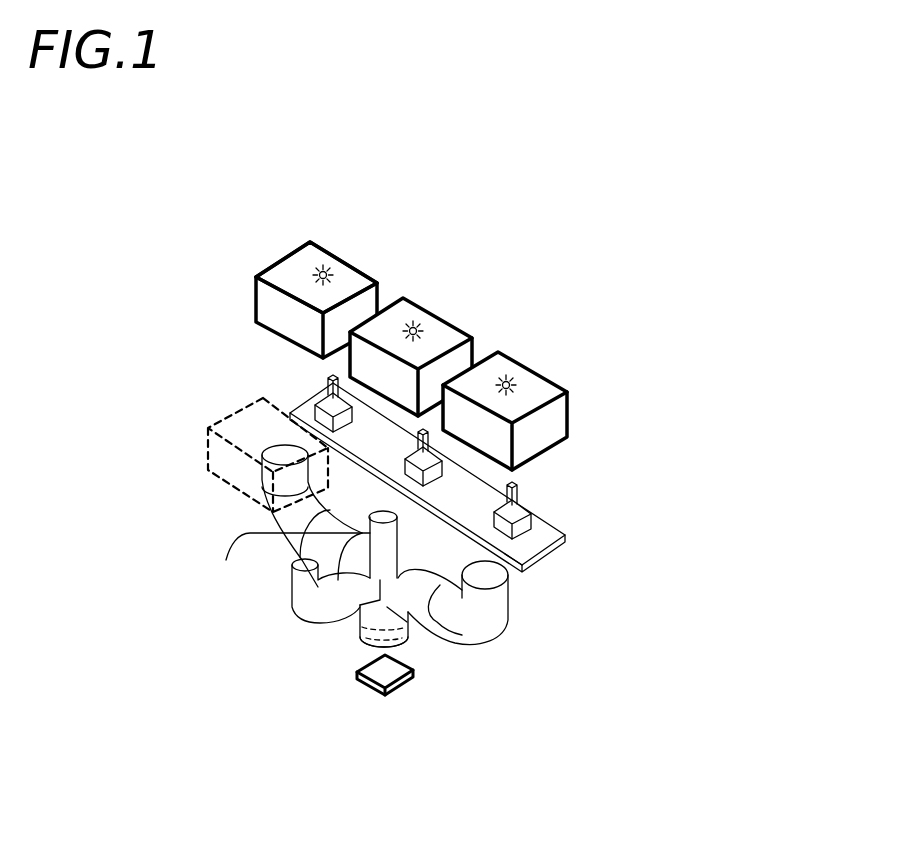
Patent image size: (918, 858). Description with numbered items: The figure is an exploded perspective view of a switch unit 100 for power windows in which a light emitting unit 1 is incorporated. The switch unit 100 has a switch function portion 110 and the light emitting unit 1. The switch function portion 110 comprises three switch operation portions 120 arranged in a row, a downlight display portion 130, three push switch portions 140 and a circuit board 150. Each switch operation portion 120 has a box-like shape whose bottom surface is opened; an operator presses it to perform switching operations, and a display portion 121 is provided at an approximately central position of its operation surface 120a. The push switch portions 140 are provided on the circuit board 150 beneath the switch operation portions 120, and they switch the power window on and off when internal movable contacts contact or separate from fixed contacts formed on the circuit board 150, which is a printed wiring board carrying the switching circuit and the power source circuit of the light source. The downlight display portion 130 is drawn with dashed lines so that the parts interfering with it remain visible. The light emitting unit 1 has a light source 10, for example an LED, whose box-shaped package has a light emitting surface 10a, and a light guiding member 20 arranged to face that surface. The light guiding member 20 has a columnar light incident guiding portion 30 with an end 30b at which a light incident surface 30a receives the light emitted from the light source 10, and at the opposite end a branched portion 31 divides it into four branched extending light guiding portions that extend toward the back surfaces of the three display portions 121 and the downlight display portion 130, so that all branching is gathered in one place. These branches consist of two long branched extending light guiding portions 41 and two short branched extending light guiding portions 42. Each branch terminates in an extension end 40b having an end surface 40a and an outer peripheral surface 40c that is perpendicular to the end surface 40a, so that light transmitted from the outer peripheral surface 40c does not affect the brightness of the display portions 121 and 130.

The light emitting unit 1 is at (203, 800).
The light source 10 is at (351, 679).
The light emitting surface 10a is at (413, 672).
The light guiding member 20 is at (266, 519).
The light incident guiding portion 30 is at (359, 627).
The light incident surface 30a is at (410, 640).
The end 30b is at (412, 645).
The branched portion 31 is at (527, 568).
The end surface 40a is at (287, 455).
The extension end 40b is at (403, 571).
The outer peripheral surface 40c is at (443, 612).
The long branched extending light guiding portion 41 is at (262, 462).
The short branched extending light guiding portion 42 is at (292, 586).
The switch unit 100 is at (428, 255).
The switch function portion 110 is at (730, 257).
The switch operation portion 120 is at (552, 420).
The operation surface 120a is at (285, 270).
The display portion 121 is at (323, 270).
The downlight display portion 130 is at (207, 452).
The push switch portion 140 is at (530, 498).
The circuit board 150 is at (543, 528).